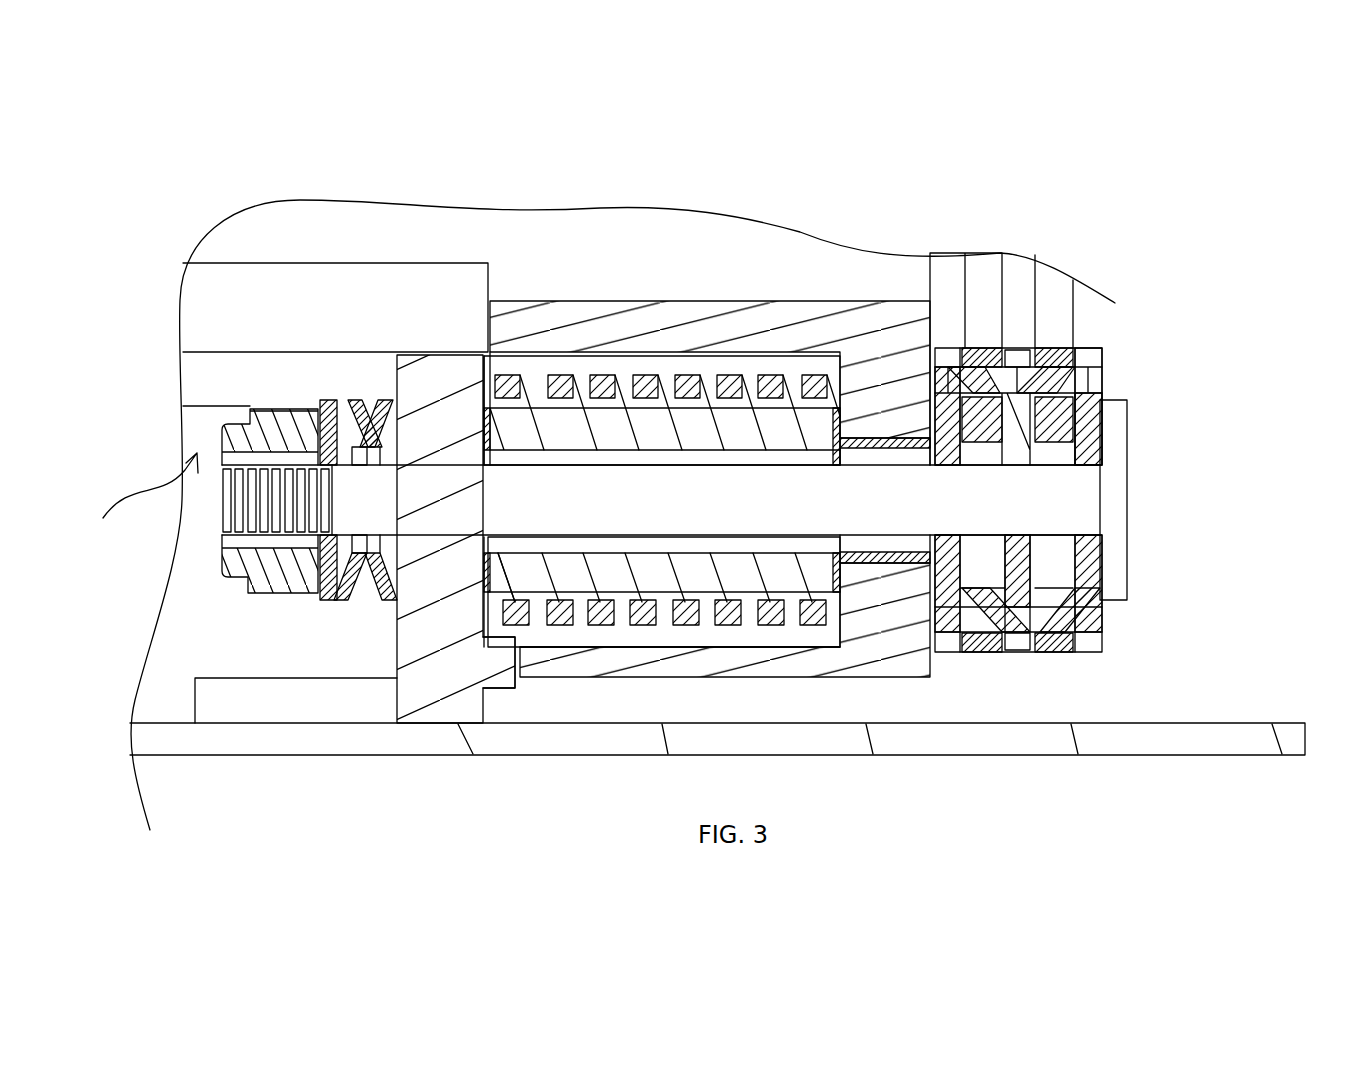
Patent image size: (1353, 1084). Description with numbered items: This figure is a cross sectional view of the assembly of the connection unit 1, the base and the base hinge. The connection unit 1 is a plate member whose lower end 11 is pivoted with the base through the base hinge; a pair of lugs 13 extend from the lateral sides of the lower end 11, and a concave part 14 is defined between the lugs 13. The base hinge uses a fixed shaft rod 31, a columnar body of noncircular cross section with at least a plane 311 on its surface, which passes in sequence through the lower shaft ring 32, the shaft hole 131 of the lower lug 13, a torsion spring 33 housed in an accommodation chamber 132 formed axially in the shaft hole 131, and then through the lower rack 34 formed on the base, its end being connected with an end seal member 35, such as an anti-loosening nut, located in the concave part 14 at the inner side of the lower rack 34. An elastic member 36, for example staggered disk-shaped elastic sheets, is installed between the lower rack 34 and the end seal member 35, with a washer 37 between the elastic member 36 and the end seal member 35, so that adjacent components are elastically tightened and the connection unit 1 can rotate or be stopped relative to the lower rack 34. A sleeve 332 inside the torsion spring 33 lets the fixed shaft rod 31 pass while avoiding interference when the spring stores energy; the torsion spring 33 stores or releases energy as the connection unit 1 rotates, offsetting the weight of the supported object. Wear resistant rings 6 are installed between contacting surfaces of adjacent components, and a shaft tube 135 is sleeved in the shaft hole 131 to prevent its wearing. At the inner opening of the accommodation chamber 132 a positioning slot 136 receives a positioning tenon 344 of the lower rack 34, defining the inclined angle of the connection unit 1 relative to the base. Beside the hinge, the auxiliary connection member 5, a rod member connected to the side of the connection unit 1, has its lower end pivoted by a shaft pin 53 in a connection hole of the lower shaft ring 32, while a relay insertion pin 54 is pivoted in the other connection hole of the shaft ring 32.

The connection unit 1 is at (575, 262).
The lower end 11 is at (220, 300).
The lug 13 is at (567, 677).
The shaft hole 131 is at (878, 430).
The accommodation chamber 132 is at (748, 637).
The shaft tube 135 is at (873, 560).
The positioning slot 136 is at (520, 637).
The concave part 14 is at (140, 503).
The fixed shaft rod 31 is at (1115, 488).
The plane 311 is at (1068, 514).
The lower shaft ring 32 is at (1090, 435).
The torsion spring 33 is at (604, 600).
The sleeve 332 is at (700, 577).
The lower rack 34 is at (362, 700).
The positioning tenon 344 is at (503, 680).
The end seal member 35 is at (266, 582).
The elastic member 36 is at (372, 598).
The washer 37 is at (328, 592).
The auxiliary connection member 5 is at (1060, 322).
The shaft pin 53 is at (1075, 385).
The relay insertion pin 54 is at (985, 637).
The wear resistant ring 6 is at (480, 585).